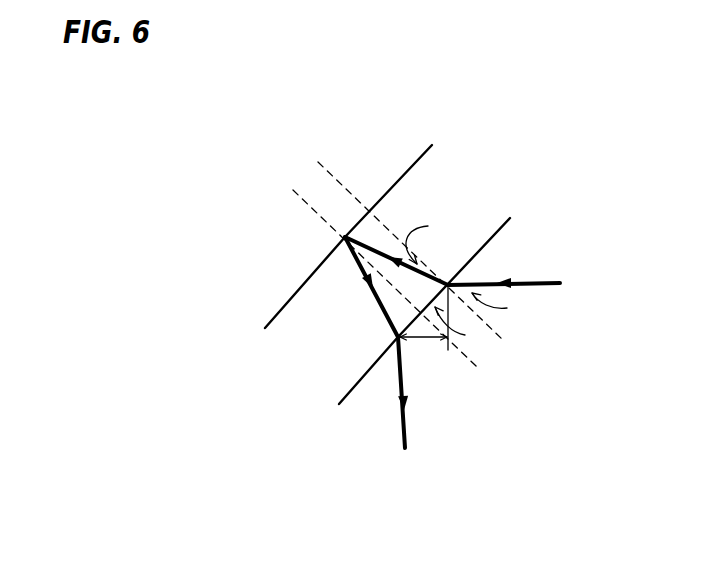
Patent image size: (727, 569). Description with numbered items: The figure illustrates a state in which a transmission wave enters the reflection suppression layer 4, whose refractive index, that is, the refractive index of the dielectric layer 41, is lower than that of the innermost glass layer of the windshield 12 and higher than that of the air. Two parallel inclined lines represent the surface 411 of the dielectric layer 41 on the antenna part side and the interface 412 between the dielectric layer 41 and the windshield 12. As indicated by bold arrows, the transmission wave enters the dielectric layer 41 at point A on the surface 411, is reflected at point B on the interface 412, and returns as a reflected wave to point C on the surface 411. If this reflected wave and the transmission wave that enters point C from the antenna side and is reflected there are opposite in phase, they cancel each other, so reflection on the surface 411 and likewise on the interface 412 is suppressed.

The interface 412 is at (414, 164).
The surface 411 is at (494, 239).
The windshield 12 is at (268, 321).
The dielectric layer 41 is at (341, 388).
The reflection suppression layer 4 is at (385, 466).